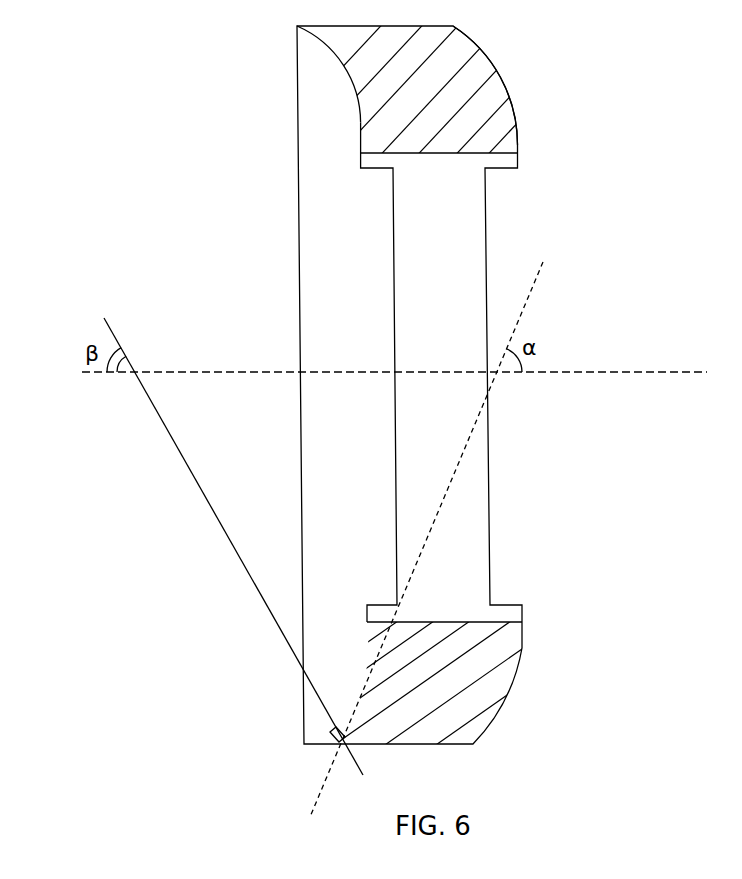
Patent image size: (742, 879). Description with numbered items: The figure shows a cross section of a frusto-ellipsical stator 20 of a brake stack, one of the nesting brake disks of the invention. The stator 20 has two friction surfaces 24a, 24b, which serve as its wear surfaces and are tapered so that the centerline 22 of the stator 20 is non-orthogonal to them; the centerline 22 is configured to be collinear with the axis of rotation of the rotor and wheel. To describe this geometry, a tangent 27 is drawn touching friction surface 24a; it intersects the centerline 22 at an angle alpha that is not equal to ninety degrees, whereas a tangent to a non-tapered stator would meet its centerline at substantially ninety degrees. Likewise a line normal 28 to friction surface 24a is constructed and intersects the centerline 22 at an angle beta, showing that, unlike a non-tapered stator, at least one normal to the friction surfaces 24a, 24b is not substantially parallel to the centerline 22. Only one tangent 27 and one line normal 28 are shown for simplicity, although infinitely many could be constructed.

The stator 20 is at (593, 288).
The centerline 22 is at (658, 372).
The friction surface 24a is at (360, 123).
The friction surface 24b is at (508, 84).
The tangent 27 is at (317, 797).
The line normal 28 is at (253, 587).